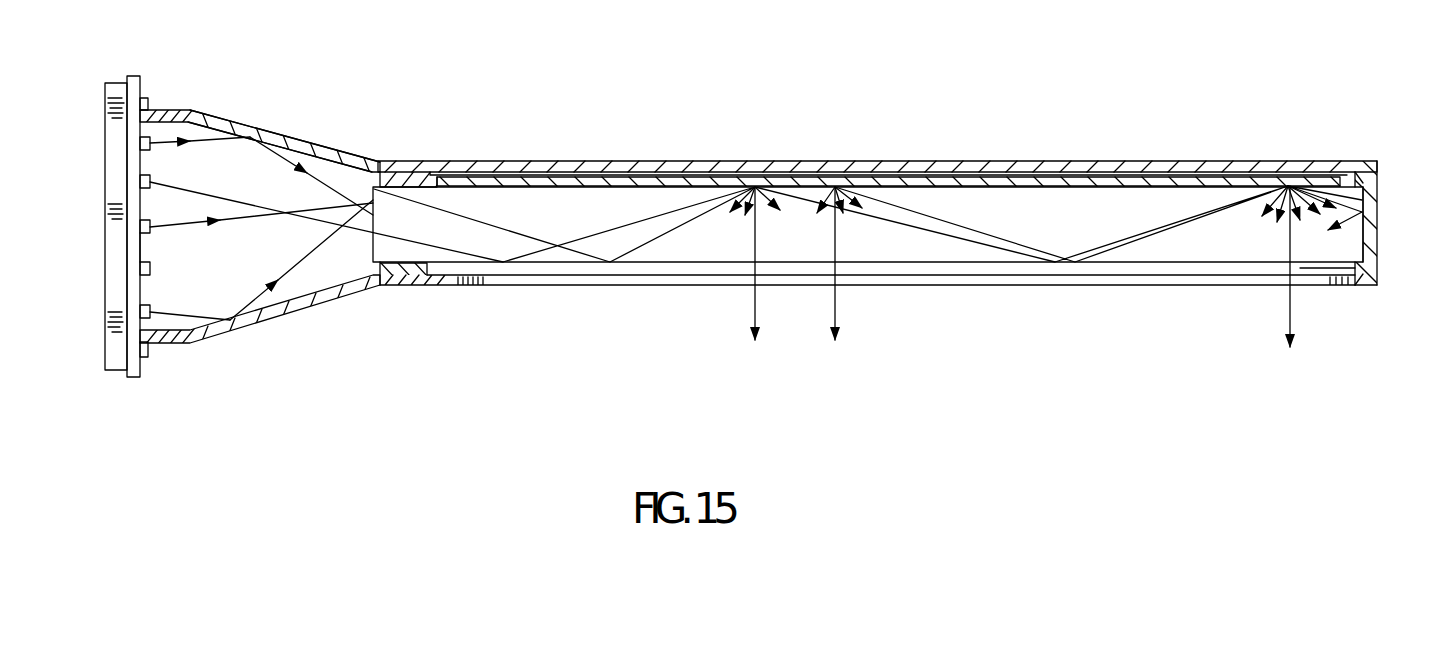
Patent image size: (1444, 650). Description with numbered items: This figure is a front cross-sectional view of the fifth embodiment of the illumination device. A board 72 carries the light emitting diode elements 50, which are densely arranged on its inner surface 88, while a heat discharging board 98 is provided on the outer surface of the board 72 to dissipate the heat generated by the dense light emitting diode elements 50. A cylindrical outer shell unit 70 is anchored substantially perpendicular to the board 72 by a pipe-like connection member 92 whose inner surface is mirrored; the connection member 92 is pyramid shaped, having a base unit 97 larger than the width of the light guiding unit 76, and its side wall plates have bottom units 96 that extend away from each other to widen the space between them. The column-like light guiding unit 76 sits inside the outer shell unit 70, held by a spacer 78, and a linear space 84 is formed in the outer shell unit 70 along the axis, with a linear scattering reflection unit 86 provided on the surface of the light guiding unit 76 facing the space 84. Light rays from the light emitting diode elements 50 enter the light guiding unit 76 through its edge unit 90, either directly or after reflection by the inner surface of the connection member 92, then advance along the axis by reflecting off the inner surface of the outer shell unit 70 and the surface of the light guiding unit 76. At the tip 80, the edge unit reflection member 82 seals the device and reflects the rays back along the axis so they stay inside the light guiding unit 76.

The light emitting diode elements 50 is at (140, 182).
The outer shell unit 70 is at (899, 215).
The board 72 is at (137, 380).
The light guiding unit 76 is at (595, 200).
The spacer 78 is at (412, 270).
The tip 80 is at (1347, 160).
The edge unit reflection member 82 is at (1378, 248).
The linear space 84 is at (617, 283).
The linear scattering reflection unit 86 is at (1023, 183).
The inner surface 88 is at (145, 245).
The edge unit 90 is at (363, 250).
The connection member 92 is at (280, 133).
The bottom units 96 is at (177, 110).
The base unit 97 is at (403, 162).
The heat discharging board 98 is at (120, 237).